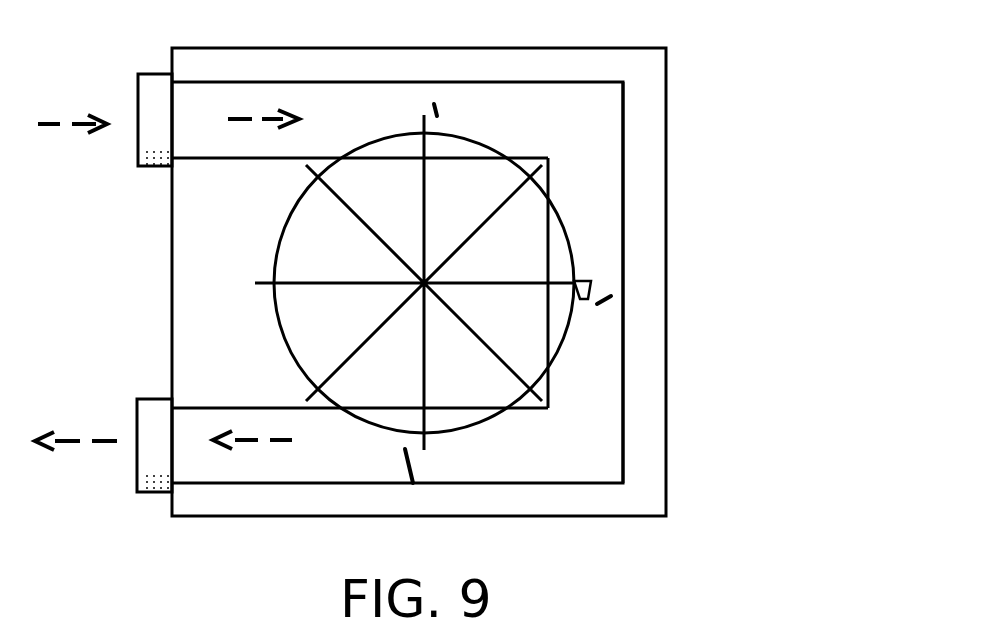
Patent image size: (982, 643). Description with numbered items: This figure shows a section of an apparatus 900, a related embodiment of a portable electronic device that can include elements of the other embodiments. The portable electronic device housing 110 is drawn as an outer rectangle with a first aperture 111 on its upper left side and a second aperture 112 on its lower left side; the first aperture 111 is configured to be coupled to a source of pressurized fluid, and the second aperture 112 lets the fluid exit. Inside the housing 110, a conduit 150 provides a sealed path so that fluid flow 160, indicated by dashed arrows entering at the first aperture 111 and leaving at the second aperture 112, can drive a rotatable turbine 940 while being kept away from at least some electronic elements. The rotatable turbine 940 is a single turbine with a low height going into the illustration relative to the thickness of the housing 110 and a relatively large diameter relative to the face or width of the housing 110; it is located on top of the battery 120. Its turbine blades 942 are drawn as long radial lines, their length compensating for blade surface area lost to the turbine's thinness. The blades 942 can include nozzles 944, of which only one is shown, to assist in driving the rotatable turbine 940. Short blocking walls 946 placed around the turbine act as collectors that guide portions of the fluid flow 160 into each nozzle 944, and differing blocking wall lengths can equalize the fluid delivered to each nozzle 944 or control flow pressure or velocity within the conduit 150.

The apparatus 900 is at (786, 109).
The portable electronic device housing 110 is at (540, 65).
The first aperture 111 is at (112, 107).
The second aperture 112 is at (114, 424).
The battery 120 is at (197, 268).
The conduit 150 is at (652, 187).
The fluid flow 160 is at (237, 117).
The rotatable turbine 940 is at (483, 419).
The turbine blades 942 is at (333, 368).
The nozzle 944 is at (585, 280).
The blocking walls 946 is at (450, 103).